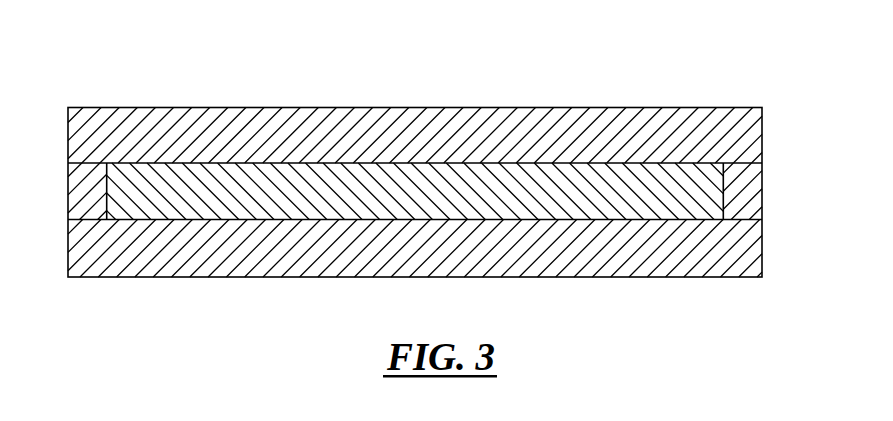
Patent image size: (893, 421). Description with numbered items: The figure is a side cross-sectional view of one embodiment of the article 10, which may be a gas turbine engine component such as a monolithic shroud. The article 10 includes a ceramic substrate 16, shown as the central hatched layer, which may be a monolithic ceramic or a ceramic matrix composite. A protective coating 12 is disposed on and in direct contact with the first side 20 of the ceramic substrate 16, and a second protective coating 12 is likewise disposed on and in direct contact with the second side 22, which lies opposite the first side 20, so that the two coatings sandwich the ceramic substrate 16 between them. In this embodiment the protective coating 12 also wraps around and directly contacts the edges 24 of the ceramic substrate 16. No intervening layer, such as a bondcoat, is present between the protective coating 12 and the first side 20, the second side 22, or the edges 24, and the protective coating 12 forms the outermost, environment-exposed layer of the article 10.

The article 10 is at (415, 159).
The protective coating 12 is at (762, 121).
The ceramic substrate 16 is at (723, 203).
The first side 20 is at (82, 163).
The second side 22 is at (118, 220).
The edges 24 is at (107, 197).